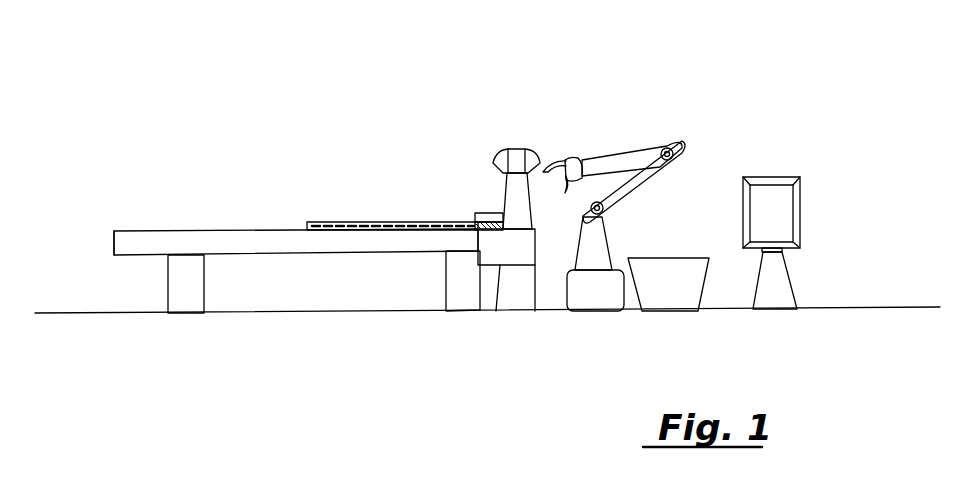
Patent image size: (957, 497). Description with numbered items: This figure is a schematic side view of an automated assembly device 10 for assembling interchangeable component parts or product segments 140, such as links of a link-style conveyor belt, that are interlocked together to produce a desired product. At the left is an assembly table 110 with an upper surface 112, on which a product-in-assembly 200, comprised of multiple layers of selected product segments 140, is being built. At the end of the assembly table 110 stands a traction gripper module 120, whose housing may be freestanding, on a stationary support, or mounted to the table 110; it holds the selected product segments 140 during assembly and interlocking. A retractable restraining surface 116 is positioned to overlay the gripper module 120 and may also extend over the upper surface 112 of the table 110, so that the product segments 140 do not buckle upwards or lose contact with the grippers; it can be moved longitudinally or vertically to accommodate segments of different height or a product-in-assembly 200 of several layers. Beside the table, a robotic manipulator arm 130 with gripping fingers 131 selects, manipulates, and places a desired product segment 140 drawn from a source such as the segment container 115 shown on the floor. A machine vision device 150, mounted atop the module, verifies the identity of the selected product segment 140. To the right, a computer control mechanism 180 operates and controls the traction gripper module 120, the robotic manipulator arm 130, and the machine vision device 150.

The automated assembly device 10 is at (146, 88).
The assembly table 110 is at (158, 238).
The upper surface 112 is at (115, 230).
The product-in-assembly 200 is at (387, 222).
The product segments 140 is at (473, 220).
The restraining surface 116 is at (480, 215).
The traction gripper module 120 is at (508, 250).
The machine vision device 150 is at (512, 160).
The robotic manipulator arm 130 is at (618, 160).
The gripping fingers 131 is at (553, 167).
The segment container 115 is at (663, 282).
The computer control mechanism 180 is at (760, 210).